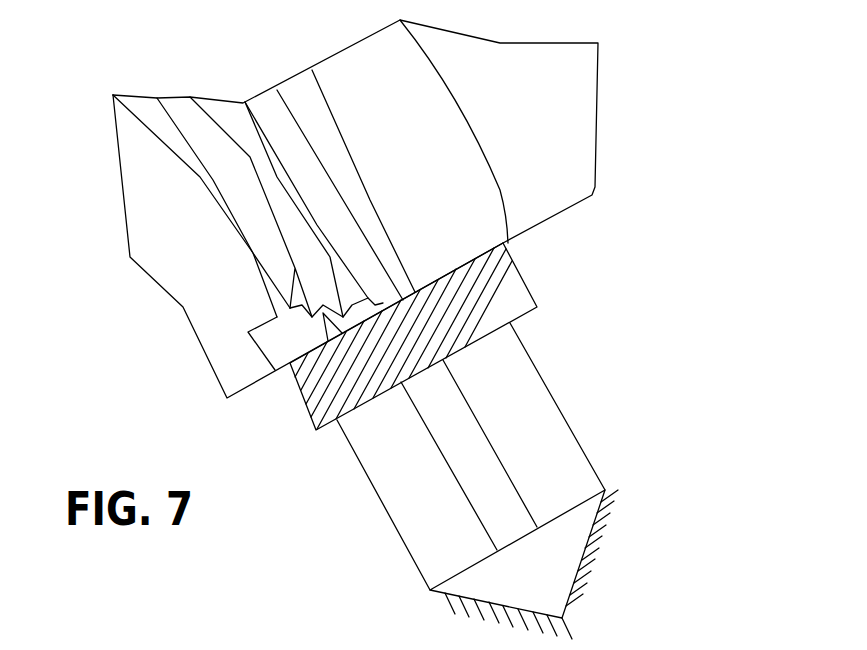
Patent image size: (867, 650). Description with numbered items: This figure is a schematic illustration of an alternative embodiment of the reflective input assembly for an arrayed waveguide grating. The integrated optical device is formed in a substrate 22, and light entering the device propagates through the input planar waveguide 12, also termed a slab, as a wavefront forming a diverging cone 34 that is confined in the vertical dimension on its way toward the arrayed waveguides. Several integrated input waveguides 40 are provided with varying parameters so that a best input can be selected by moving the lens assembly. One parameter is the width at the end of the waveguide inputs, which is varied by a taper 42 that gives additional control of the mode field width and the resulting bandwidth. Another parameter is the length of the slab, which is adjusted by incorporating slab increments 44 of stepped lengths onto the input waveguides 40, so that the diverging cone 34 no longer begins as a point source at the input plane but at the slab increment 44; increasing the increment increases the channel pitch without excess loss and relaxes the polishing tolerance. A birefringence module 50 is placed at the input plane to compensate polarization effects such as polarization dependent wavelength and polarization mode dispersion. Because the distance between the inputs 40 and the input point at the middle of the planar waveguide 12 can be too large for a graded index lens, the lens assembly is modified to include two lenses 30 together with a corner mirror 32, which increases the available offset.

The input planar waveguide 12 is at (427, 170).
The substrate 22 is at (528, 97).
The lenses 30 is at (545, 385).
The corner mirror 32 is at (605, 490).
The diverging cone 34 is at (293, 102).
The input waveguides 40 is at (177, 160).
The taper 42 is at (263, 288).
The slab increments 44 is at (263, 350).
The birefringence module 50 is at (490, 297).